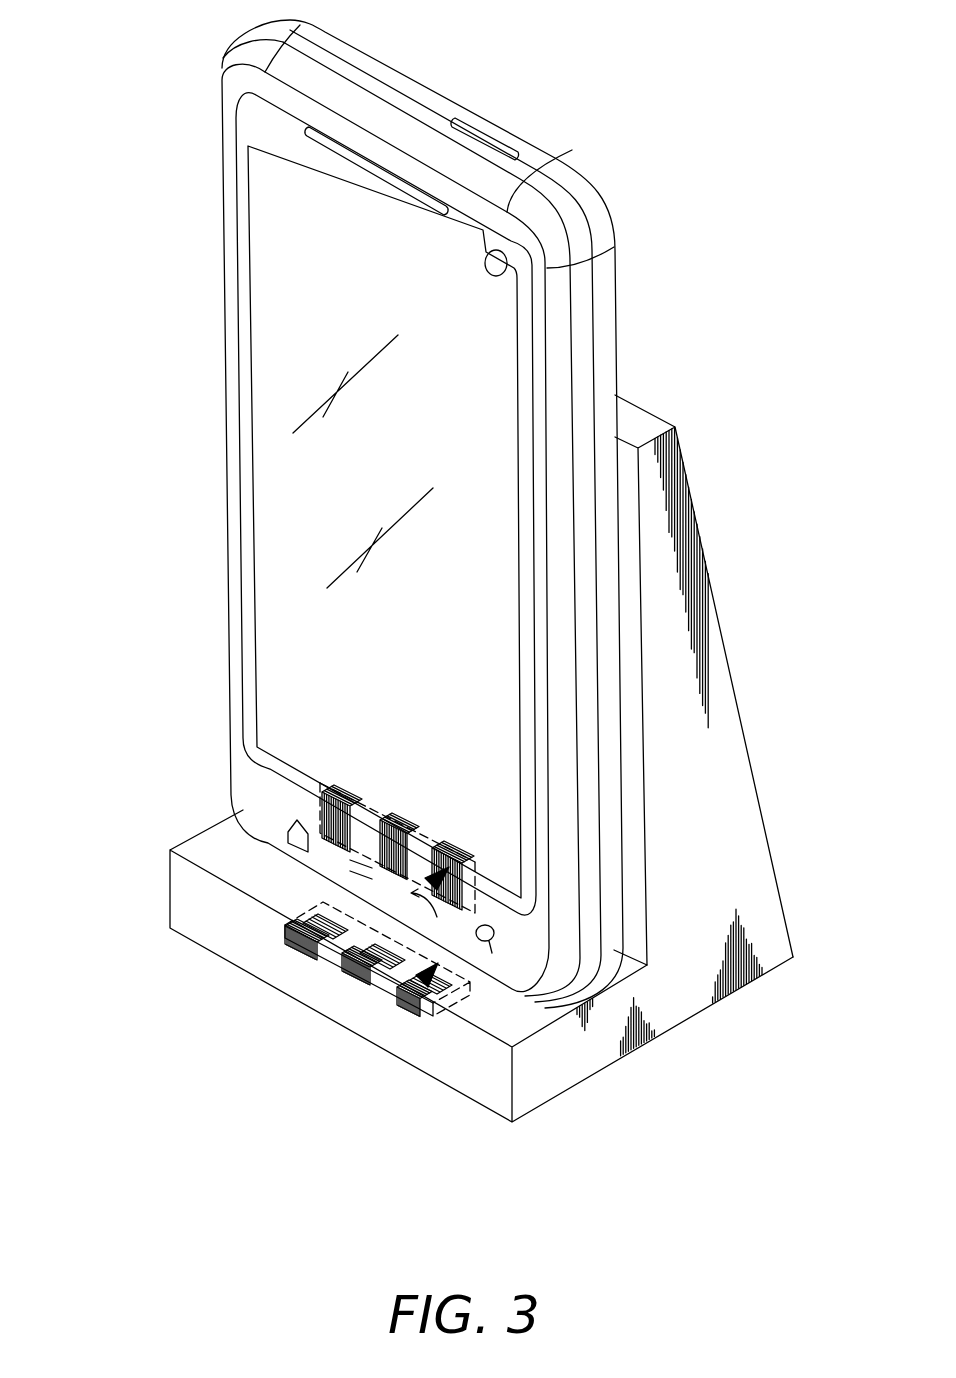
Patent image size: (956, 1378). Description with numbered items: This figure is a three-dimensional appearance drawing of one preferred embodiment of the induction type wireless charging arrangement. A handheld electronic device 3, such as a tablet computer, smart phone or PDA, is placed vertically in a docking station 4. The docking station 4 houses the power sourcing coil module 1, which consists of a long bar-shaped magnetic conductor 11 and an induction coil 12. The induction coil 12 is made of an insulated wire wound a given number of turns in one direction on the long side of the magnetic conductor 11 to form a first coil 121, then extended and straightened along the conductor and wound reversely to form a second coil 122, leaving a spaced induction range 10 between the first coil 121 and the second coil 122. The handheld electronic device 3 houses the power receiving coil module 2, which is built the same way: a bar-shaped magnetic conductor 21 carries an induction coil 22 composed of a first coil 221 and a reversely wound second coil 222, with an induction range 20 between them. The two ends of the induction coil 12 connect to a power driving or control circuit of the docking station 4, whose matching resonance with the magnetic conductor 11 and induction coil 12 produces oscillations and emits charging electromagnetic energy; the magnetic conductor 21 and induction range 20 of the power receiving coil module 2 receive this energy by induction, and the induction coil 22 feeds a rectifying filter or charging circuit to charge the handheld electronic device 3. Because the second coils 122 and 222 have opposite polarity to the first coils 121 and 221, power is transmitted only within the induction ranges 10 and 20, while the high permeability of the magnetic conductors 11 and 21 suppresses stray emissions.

The power sourcing coil module 1 is at (270, 980).
The power receiving coil module 2 is at (290, 785).
The handheld electronic device 3 is at (585, 358).
The docking station 4 is at (708, 712).
The induction range 10 is at (428, 1013).
The magnetic conductor 11 is at (287, 928).
The induction coil 12 is at (275, 1003).
The first coil 121 is at (403, 993).
The second coil 122 is at (280, 1002).
The induction range 20 is at (480, 856).
The magnetic conductor 21 is at (320, 792).
The induction coil 22 is at (396, 787).
The first coil 221 is at (445, 843).
The second coil 222 is at (396, 812).